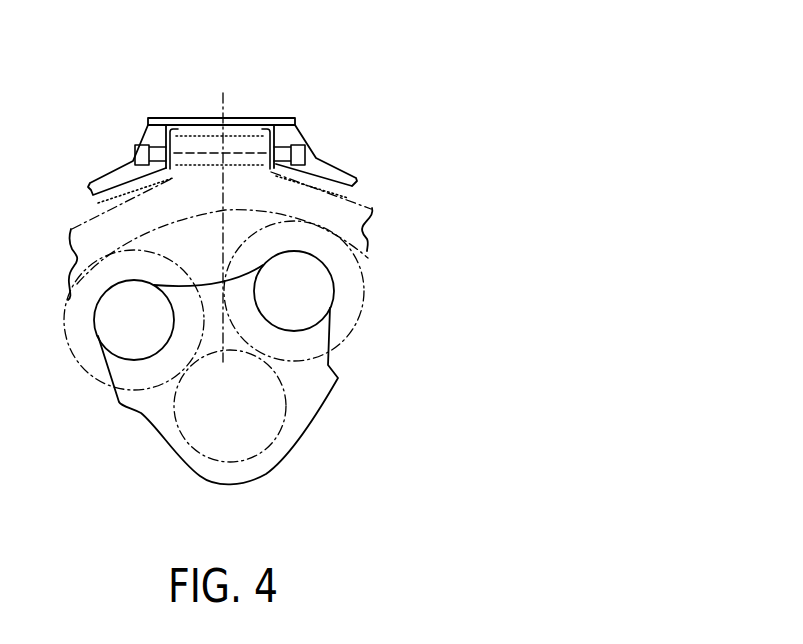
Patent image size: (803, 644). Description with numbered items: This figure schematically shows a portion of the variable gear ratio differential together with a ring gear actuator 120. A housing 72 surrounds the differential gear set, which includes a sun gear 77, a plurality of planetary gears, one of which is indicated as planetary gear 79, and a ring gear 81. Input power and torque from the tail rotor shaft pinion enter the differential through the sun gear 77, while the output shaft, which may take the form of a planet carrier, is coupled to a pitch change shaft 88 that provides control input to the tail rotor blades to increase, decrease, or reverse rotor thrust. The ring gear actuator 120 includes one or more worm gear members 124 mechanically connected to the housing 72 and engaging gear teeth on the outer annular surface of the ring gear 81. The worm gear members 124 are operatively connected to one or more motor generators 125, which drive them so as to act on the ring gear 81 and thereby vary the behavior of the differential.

The ring gear actuator 120 is at (392, 72).
The worm gear member 124 is at (186, 109).
The housing 72 is at (75, 168).
The motor generator 125 is at (318, 132).
The ring gear 81 is at (367, 223).
The planetary gear 79 is at (345, 306).
The pitch change shaft 88 is at (113, 395).
The sun gear 77 is at (280, 404).